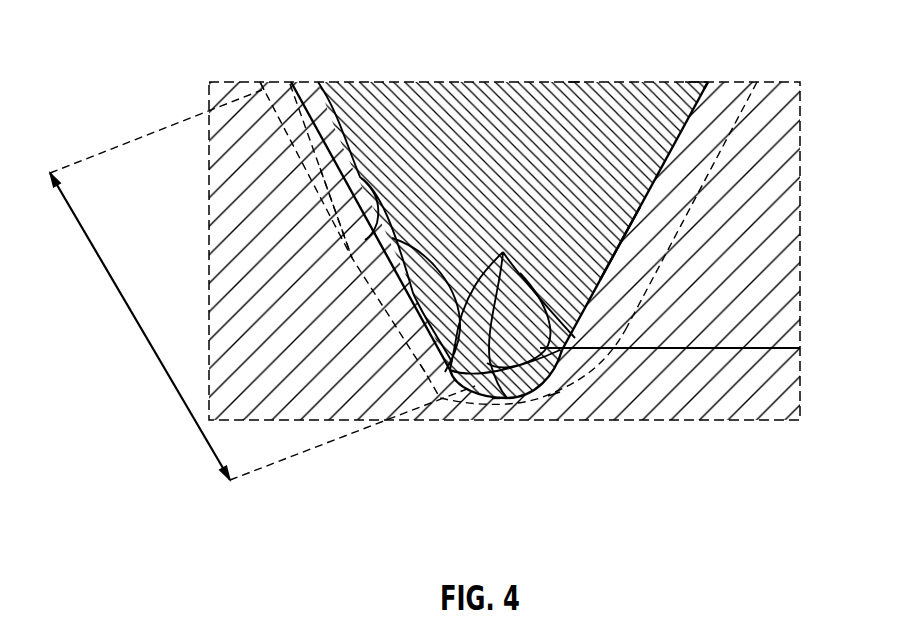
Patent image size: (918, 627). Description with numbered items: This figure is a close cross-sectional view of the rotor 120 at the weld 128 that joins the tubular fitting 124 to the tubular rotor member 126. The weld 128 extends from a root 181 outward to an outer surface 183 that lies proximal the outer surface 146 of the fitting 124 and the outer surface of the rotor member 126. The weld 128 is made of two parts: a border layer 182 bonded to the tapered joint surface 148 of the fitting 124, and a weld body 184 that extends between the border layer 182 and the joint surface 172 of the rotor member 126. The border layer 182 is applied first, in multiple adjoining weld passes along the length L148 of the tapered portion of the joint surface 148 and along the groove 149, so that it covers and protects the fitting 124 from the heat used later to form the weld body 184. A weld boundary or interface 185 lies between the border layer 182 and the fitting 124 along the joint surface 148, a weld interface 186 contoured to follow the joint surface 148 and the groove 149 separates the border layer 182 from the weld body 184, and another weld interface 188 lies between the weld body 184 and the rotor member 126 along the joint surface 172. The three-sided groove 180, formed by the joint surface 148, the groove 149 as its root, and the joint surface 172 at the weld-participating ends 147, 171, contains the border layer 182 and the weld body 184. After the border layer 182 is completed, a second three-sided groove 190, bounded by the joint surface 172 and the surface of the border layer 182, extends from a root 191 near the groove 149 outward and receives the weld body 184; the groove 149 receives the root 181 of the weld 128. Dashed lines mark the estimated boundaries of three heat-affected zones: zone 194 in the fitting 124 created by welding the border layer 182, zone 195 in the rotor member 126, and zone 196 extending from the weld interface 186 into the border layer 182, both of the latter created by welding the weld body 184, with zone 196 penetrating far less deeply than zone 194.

The rotor 120 is at (206, 88).
The fitting 124 is at (210, 178).
The rotor member 126 is at (790, 138).
The weld 128 is at (515, 103).
The outer surface of fitting 146 is at (261, 82).
The weld-participating end of fitting 147 is at (436, 407).
The joint surface of fitting 148 is at (308, 95).
The groove 149 is at (502, 399).
The weld-participating end of rotor member 171 is at (785, 316).
The joint surface of rotor member 172 is at (688, 110).
The groove 180 is at (576, 327).
The root 181 is at (493, 397).
The border layer 182 is at (322, 148).
The outer surface 183 is at (684, 77).
The weld body 184 is at (573, 93).
The weld boundary or interface 185 is at (355, 231).
The weld interface 186 is at (340, 100).
The weld interface 188 is at (620, 252).
The groove 190 is at (505, 250).
The root 191 is at (503, 358).
The heat-affected zone 194 is at (372, 282).
The heat-affected zone 195 is at (690, 213).
The heat-affected zone 196 is at (538, 396).
The length of tapered portion of joint surface L148 is at (143, 333).